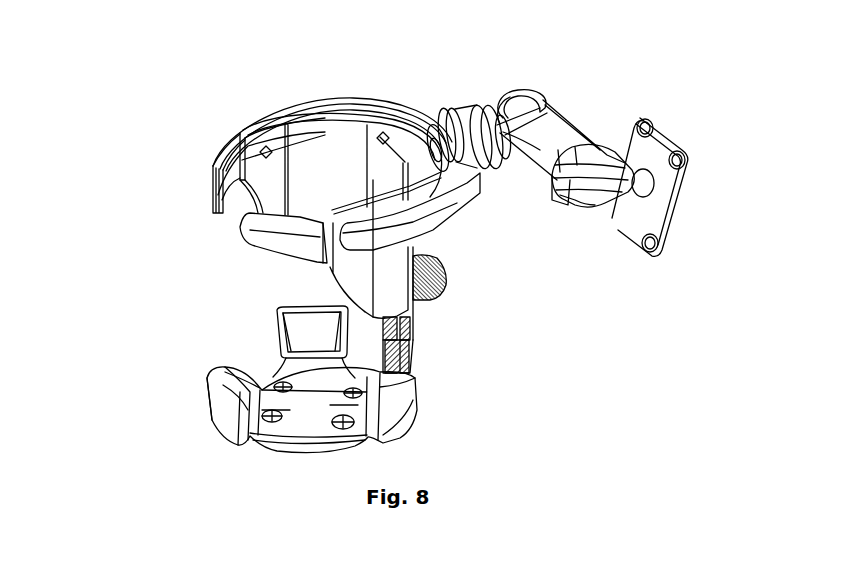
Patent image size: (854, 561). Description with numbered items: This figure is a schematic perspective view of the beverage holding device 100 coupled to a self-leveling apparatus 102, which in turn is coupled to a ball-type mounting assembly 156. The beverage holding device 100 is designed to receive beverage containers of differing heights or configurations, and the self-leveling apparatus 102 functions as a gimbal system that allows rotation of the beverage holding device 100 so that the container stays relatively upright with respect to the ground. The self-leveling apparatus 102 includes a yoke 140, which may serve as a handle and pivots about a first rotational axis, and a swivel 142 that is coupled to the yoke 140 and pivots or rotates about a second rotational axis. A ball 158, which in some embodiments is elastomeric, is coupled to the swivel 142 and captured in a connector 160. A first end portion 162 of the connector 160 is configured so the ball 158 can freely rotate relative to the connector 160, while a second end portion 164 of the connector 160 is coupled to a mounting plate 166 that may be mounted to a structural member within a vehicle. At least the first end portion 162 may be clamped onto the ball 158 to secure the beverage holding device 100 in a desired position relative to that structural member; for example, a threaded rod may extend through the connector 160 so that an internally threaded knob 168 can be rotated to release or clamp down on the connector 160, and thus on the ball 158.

The beverage holding device 100 is at (216, 309).
The self-leveling apparatus 102 is at (348, 84).
The yoke 140 is at (383, 100).
The swivel 142 is at (459, 104).
The ball-type mounting assembly 156 is at (590, 84).
The ball 158 is at (508, 112).
The connector 160 is at (536, 172).
The first end portion 162 is at (515, 140).
The second end portion 164 is at (613, 203).
The mounting plate 166 is at (673, 137).
The internally threaded knob 168 is at (567, 197).